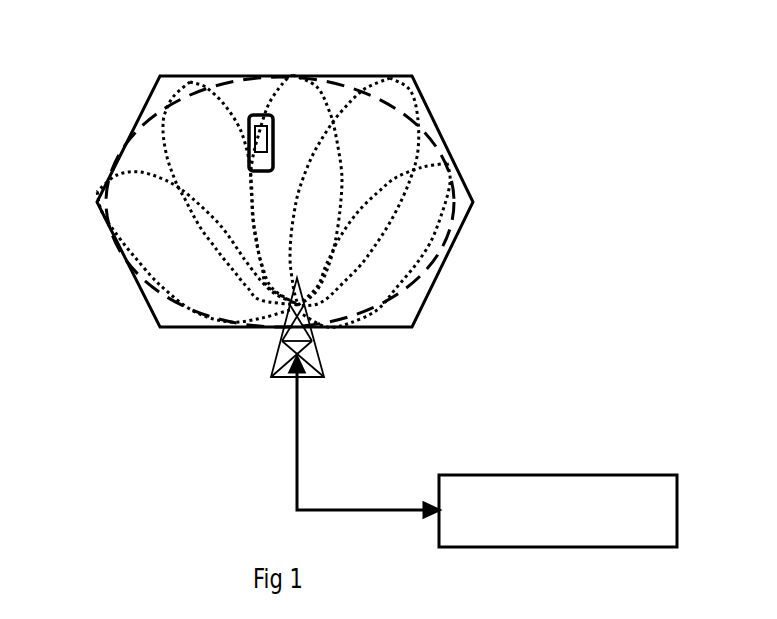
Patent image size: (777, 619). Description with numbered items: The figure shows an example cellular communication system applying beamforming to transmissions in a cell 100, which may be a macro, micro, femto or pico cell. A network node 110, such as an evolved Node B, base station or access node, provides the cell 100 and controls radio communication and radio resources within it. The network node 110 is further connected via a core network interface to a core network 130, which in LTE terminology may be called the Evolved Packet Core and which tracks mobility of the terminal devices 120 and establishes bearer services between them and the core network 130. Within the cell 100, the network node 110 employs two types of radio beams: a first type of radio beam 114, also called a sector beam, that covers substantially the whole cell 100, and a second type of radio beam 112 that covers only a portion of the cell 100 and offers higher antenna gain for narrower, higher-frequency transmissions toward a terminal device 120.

The cell 100 is at (357, 76).
The network node 110 is at (292, 305).
The second type of radio beam 112 is at (175, 102).
The first type of radio beam 114 is at (430, 138).
The terminal device 120 is at (249, 145).
The core network 130 is at (558, 511).